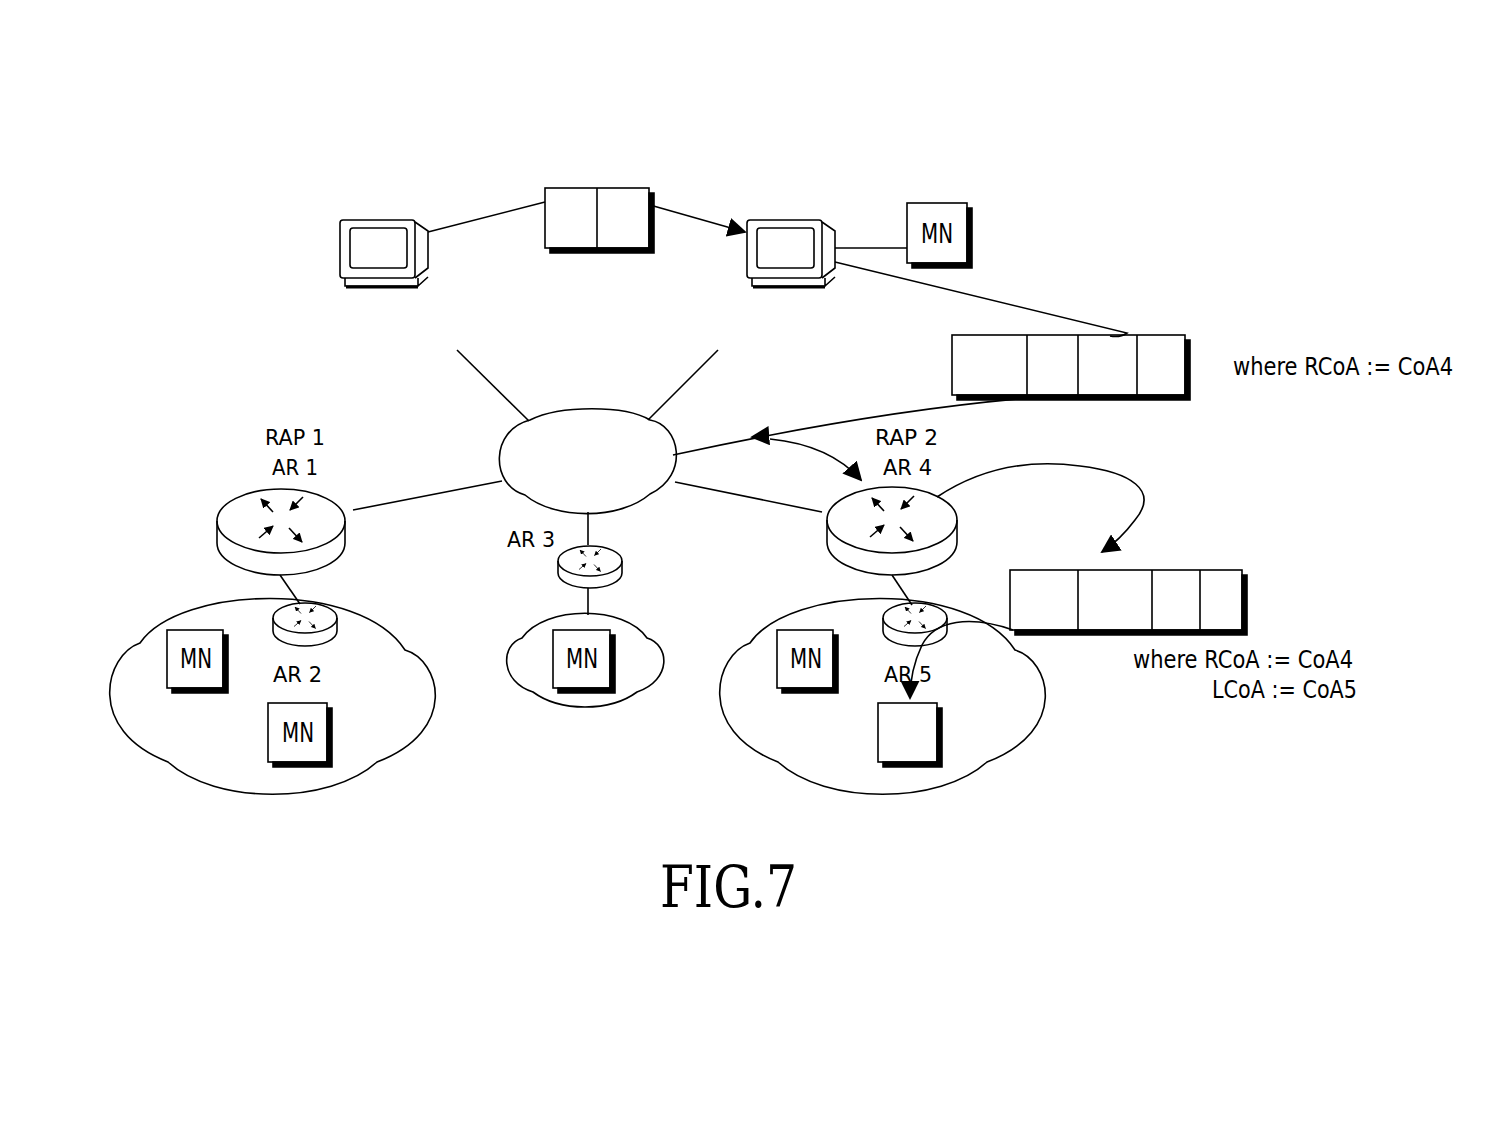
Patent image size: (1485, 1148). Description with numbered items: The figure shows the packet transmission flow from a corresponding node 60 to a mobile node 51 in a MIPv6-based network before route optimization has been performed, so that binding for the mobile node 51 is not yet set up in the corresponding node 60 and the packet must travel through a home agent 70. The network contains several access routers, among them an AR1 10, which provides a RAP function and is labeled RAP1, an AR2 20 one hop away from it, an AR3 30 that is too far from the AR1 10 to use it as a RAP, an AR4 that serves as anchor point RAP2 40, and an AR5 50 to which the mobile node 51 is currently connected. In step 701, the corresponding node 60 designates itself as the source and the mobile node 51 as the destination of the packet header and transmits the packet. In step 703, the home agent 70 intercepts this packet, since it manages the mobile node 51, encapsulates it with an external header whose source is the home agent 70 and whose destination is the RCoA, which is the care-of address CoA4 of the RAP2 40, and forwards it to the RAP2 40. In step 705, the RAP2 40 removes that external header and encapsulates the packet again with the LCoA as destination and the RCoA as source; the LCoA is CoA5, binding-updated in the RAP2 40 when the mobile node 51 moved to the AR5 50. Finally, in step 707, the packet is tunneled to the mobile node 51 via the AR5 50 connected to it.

The AR1 10 is at (343, 553).
The AR2 20 is at (328, 640).
The AR3 30 is at (622, 553).
The RAP2 40 is at (942, 562).
The AR5 50 is at (938, 638).
The mobile node 51 is at (940, 743).
The corresponding node 60 is at (428, 260).
The home agent 70 is at (775, 220).
The packet transmission step 701 is at (618, 210).
The home agent interception and encapsulation step 703 is at (1071, 339).
The RAP2 re-encapsulation step 705 is at (1092, 546).
The tunneling step to mobile node 707 is at (961, 660).